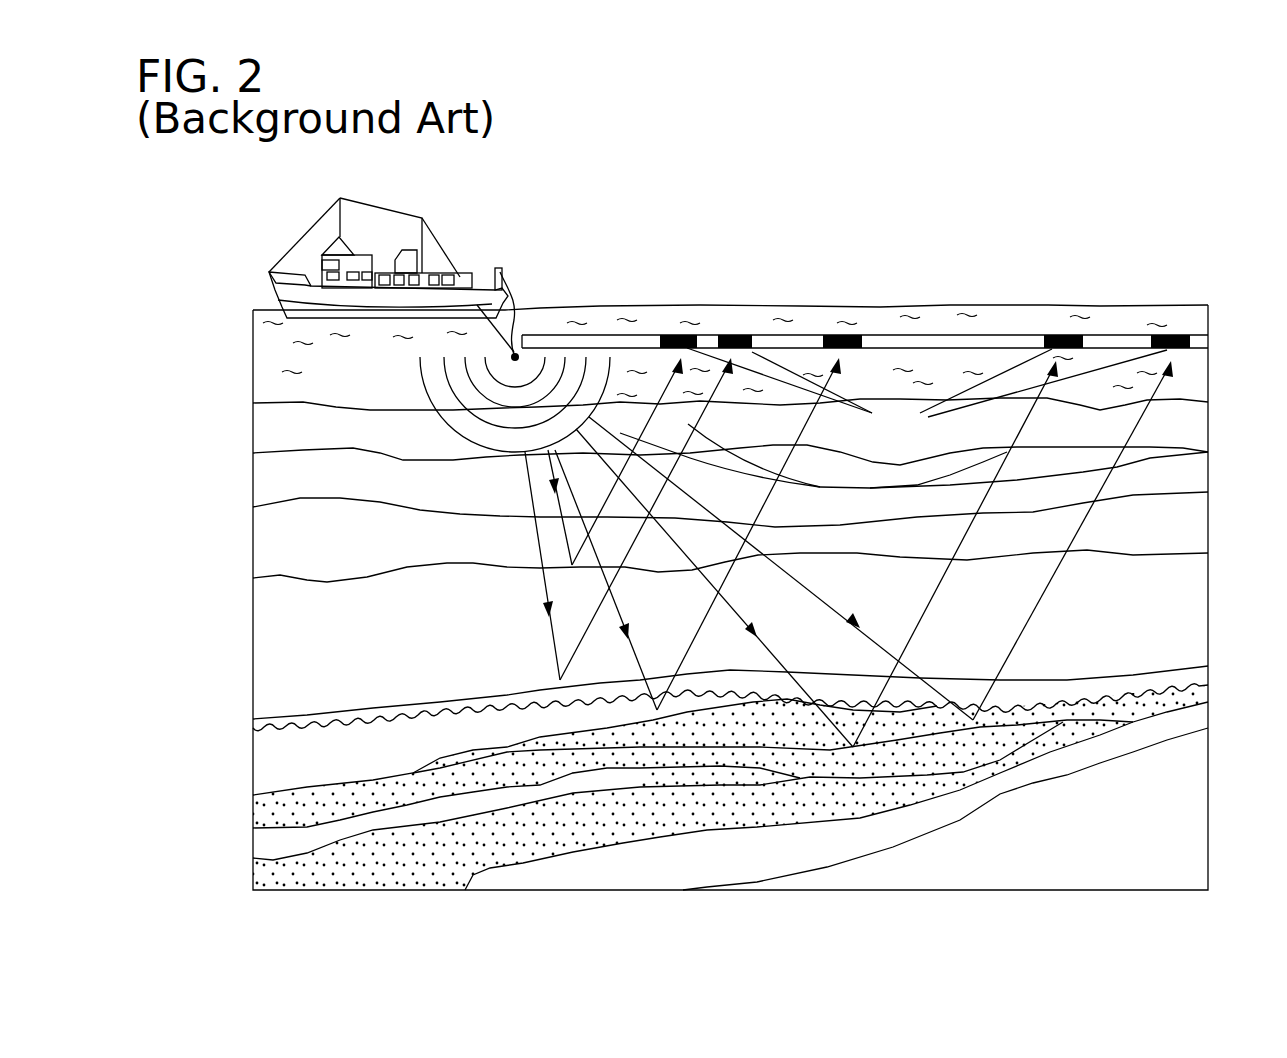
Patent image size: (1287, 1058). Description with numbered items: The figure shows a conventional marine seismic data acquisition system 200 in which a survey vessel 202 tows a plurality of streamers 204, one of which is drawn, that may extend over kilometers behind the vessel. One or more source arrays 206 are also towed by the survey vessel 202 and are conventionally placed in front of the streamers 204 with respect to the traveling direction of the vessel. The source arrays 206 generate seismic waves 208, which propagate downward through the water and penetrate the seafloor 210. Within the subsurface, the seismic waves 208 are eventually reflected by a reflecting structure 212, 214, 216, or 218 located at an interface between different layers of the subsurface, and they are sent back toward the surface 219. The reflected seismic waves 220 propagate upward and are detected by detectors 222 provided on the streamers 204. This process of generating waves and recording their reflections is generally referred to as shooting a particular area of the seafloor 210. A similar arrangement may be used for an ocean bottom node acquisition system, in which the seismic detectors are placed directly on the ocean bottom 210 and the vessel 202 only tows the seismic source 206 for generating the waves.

The marine seismic data acquisition system 200 is at (797, 168).
The survey vessel 202 is at (377, 300).
The streamers 204 is at (757, 336).
The source arrays 206 is at (518, 354).
The seismic waves 208 is at (410, 381).
The seafloor 210 is at (1188, 398).
The reflecting structure 212 is at (507, 568).
The reflecting structure 214 is at (535, 687).
The reflecting structure 216 is at (673, 715).
The reflecting structure 218 is at (878, 745).
The surface 219 is at (1048, 308).
The reflected seismic waves 220 is at (810, 420).
The detectors 222 is at (927, 389).